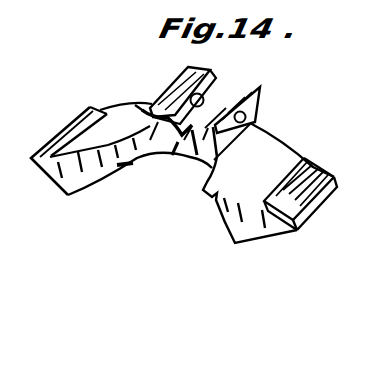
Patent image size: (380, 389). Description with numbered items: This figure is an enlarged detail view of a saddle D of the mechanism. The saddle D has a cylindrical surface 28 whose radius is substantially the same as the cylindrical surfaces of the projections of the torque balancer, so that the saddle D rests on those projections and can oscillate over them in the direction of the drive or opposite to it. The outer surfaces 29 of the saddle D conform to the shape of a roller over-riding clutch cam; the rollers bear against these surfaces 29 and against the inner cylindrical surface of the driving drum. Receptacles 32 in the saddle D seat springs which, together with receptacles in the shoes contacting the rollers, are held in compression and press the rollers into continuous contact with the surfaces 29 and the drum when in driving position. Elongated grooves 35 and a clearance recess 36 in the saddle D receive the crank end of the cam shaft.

The saddle D is at (182, 173).
The surfaces 29 is at (118, 123).
The receptacles 32 is at (208, 88).
The elongated grooves 35 is at (260, 87).
The cylindrical surface 28 is at (103, 174).
The clearance recess 36 is at (188, 161).